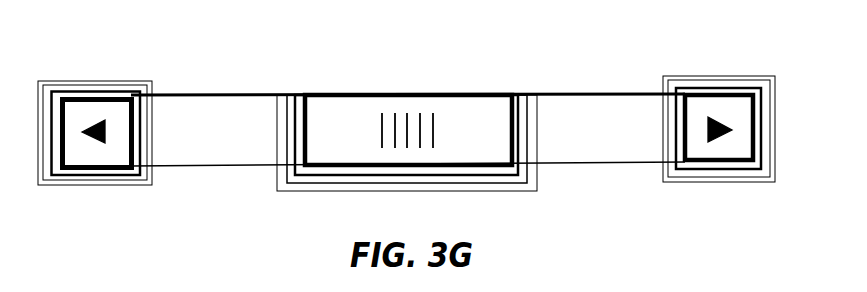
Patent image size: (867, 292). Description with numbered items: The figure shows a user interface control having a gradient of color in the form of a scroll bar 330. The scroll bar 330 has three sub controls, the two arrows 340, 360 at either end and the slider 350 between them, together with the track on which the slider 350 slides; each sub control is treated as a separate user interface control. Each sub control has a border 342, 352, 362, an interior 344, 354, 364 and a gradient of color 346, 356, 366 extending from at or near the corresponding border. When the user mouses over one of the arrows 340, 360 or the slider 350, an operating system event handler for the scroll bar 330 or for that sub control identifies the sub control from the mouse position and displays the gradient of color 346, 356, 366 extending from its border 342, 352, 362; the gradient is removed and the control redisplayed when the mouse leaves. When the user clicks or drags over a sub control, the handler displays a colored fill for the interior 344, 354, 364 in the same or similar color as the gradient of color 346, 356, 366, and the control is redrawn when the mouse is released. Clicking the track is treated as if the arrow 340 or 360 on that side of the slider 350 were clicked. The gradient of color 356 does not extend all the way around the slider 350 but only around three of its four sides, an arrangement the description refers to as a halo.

The scroll bar 330 is at (248, 35).
The arrow 340 is at (755, 150).
The border 342 is at (757, 122).
The interior 344 is at (745, 155).
The gradient of color 346 is at (760, 93).
The slider 350 is at (450, 166).
The border 352 is at (517, 122).
The interior 354 is at (528, 178).
The gradient of color 356 is at (523, 105).
The arrow 360 is at (132, 154).
The border 362 is at (137, 127).
The interior 364 is at (125, 157).
The gradient of color 366 is at (143, 108).